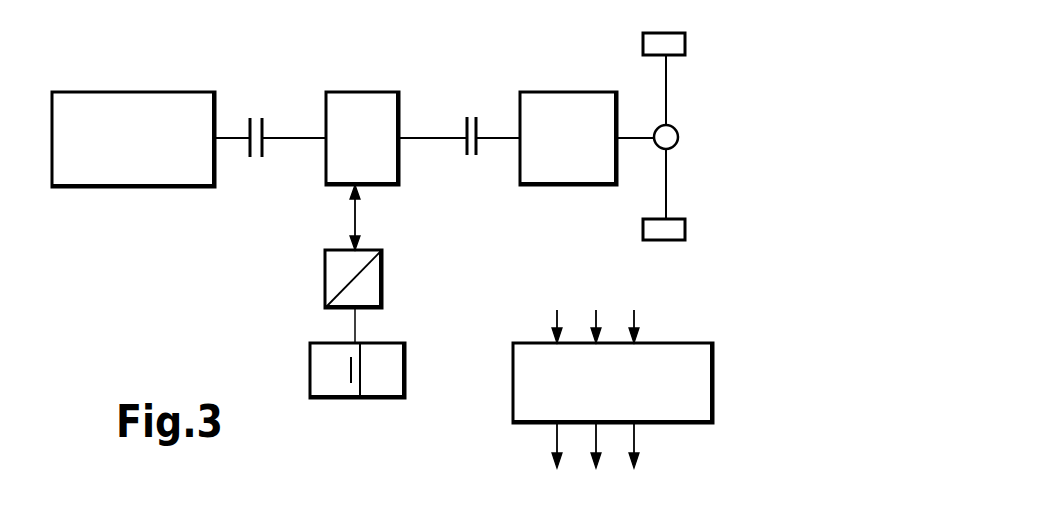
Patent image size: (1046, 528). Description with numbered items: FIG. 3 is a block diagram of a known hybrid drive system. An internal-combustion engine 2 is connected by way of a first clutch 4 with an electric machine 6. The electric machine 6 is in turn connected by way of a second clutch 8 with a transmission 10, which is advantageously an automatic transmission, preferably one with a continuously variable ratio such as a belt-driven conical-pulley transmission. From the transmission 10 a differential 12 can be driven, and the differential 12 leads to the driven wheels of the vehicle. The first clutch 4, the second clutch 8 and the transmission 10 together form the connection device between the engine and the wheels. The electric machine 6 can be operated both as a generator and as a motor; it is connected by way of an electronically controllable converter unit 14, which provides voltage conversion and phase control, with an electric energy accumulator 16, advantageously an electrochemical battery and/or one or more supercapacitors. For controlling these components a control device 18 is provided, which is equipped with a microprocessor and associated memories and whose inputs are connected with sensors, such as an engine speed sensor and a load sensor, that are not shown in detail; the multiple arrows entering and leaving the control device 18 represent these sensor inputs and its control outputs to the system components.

The internal-combustion engine 2 is at (168, 97).
The first clutch 4 is at (254, 113).
The electric machine 6 is at (380, 97).
The second clutch 8 is at (472, 112).
The transmission 10 is at (570, 97).
The differential 12 is at (679, 138).
The converter unit 14 is at (376, 280).
The electric energy accumulator 16 is at (400, 390).
The control device 18 is at (712, 400).